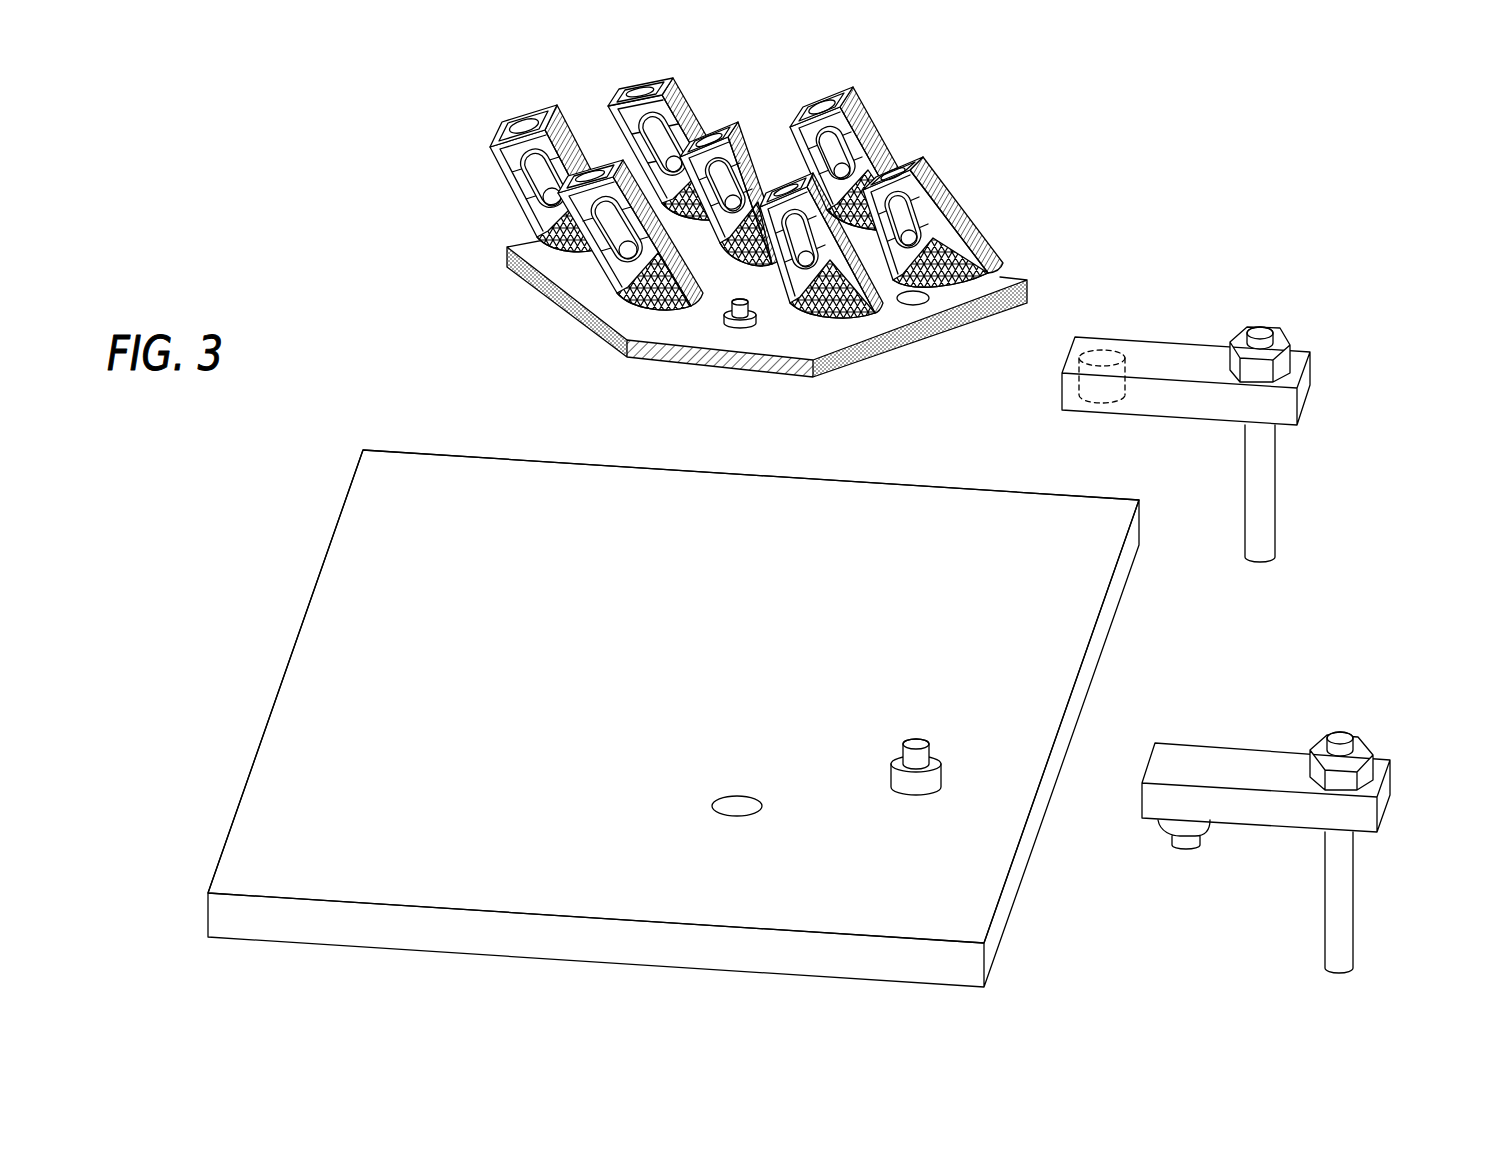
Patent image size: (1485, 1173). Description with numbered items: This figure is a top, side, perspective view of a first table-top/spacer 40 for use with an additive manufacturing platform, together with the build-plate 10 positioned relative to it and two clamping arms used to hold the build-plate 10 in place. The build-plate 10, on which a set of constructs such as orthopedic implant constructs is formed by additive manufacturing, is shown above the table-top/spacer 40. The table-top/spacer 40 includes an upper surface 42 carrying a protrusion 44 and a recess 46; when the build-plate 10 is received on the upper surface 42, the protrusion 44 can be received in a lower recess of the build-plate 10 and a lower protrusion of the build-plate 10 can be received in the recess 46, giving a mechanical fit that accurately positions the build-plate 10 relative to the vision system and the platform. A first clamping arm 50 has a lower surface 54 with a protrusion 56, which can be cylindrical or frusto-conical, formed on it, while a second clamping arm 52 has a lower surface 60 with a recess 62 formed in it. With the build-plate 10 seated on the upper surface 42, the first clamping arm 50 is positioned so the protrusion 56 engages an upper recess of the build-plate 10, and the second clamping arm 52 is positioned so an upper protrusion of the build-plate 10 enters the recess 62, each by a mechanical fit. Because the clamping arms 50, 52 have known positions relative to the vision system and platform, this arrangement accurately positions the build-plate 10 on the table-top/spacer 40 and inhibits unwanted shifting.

The build-plate 10 is at (545, 327).
The first table-top/spacer 40 is at (622, 718).
The upper surface 42 is at (248, 832).
The protrusion 44 is at (916, 792).
The recess 46 is at (737, 818).
The first clamping arm 50 is at (1302, 852).
The second clamping arm 52 is at (1255, 425).
The lower surface 54 is at (1290, 828).
The protrusion 56 is at (1187, 847).
The lower surface 60 is at (1186, 378).
The recess 62 is at (1112, 350).